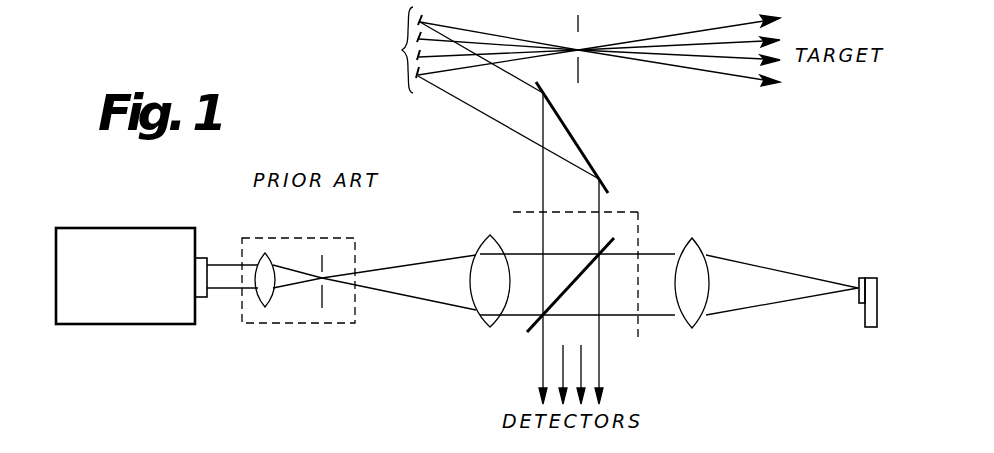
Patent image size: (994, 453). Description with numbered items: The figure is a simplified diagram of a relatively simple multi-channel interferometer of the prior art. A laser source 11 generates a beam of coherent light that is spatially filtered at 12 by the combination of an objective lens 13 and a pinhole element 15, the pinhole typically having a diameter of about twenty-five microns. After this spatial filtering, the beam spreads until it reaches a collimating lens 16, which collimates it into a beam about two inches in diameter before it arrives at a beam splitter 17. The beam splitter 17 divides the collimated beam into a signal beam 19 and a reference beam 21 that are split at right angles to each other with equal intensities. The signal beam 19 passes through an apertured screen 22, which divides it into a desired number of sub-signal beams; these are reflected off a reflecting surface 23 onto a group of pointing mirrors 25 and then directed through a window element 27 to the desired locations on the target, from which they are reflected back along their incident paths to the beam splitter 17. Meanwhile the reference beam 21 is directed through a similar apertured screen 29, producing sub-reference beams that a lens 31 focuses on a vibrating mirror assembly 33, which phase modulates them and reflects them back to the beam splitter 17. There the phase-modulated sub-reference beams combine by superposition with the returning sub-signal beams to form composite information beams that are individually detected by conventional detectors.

The laser source 11 is at (113, 240).
The spatial filter 12 is at (297, 323).
The objective lens 13 is at (268, 260).
The pinhole element 15 is at (323, 257).
The collimating lens 16 is at (472, 298).
The beam splitter 17 is at (553, 290).
The signal beam 19 is at (580, 248).
The reference beam 21 is at (580, 285).
The apertured screen 22 is at (583, 213).
The reflecting surface 23 is at (570, 128).
The pointing mirrors 25 is at (483, 93).
The window element 27 is at (580, 32).
The apertured screen 29 is at (642, 242).
The lens 31 is at (698, 245).
The vibrating mirror assembly 33 is at (878, 295).